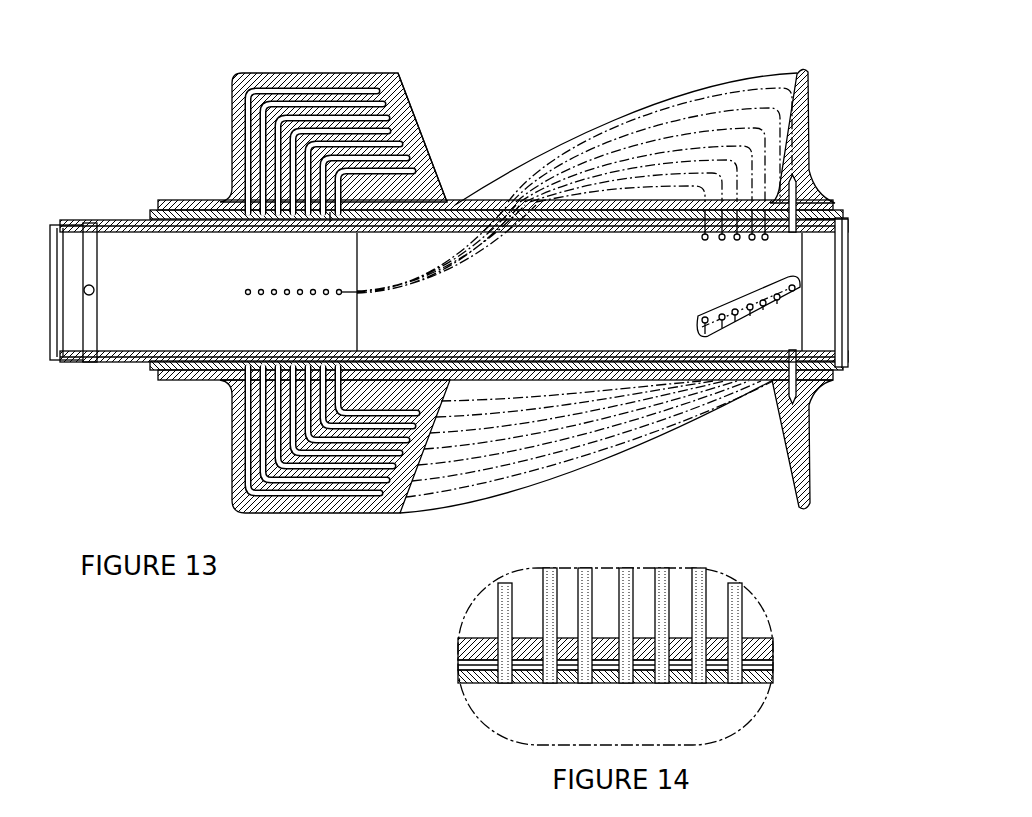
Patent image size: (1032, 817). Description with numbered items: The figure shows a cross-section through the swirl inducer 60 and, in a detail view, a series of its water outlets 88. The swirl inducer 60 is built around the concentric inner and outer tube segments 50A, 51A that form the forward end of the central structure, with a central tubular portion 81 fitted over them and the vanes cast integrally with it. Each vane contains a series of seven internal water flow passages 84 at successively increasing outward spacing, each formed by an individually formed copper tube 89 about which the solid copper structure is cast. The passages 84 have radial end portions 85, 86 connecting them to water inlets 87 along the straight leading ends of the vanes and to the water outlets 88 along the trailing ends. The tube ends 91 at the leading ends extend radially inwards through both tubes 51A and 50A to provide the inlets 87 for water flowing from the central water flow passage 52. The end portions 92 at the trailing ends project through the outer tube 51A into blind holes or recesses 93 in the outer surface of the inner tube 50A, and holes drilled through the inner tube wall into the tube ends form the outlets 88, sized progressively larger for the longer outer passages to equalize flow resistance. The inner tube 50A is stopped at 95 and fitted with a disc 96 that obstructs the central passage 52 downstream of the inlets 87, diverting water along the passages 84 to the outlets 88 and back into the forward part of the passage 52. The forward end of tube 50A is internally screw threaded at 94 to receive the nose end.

In FIG. 13, the swirl inducer 60 is at (832, 85).
In FIG. 13, the internal water flow passages 84 is at (306, 82).
In FIG. 13, the radial end portion 85 is at (238, 160).
In FIG. 13, the radial end portion 86 is at (765, 132).
In FIG. 13, the central tubular portion 81 is at (497, 203).
In FIG. 13, the outer tube segment 51A is at (493, 202).
In FIG. 14, the outer tube segment 51A is at (773, 648).
In FIG. 13, the copper tubes 89 is at (470, 212).
In FIG. 13, the internal screw thread 94 is at (821, 220).
In FIG. 13, the water inlets 87 is at (248, 234).
In FIG. 13, the tube ends 91 is at (330, 234).
In FIG. 13, the stop of inner tube 95 is at (358, 232).
In FIG. 13, the disc 96 is at (358, 307).
In FIG. 13, the inner tube segment 50A is at (582, 236).
In FIG. 14, the inner tube segment 50A is at (757, 683).
In FIG. 13, the water outlets 88 is at (704, 241).
In FIG. 14, the water outlets 88 is at (553, 683).
In FIG. 13, the blind holes or recesses 93 is at (705, 322).
In FIG. 13, the tube end portions 92 is at (760, 268).
In FIG. 14, the tube end portions 92 is at (458, 665).
In FIG. 14, the central water flow passage 52 is at (712, 720).